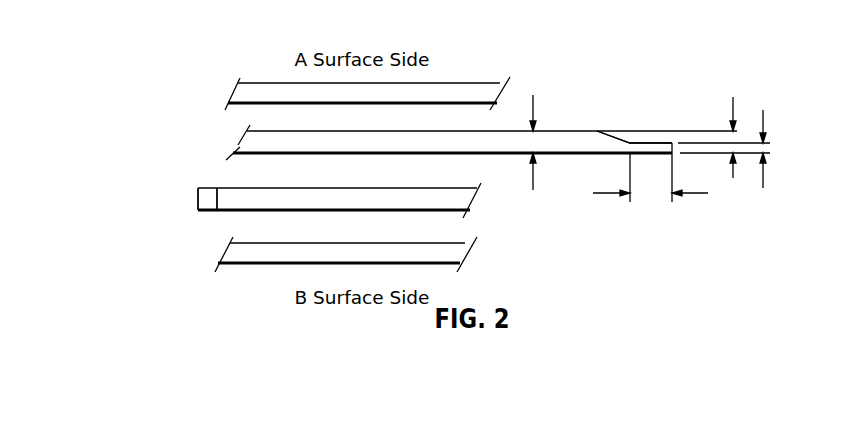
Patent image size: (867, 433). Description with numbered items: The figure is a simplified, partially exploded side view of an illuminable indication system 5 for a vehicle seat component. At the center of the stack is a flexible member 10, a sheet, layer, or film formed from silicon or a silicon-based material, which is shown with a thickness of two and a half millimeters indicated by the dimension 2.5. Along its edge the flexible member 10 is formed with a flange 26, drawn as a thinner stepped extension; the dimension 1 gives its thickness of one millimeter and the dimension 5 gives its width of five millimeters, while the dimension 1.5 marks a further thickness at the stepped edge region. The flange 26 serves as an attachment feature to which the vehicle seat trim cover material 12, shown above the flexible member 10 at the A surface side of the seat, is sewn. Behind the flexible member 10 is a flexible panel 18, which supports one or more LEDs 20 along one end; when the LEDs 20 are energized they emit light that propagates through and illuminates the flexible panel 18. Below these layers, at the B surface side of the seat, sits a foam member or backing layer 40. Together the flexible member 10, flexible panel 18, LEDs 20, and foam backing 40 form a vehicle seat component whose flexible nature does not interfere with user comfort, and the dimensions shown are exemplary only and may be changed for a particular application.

The thickness dimension 1 mm 1 is at (764, 176).
The thickness dimension 1.5 mm 1.5 is at (735, 99).
The thickness dimension 2.5 mm 2.5 is at (533, 182).
The indication system 5 is at (693, 193).
The flexible member 10 is at (240, 142).
The trim cover material 12 is at (279, 91).
The flexible panel 18 is at (428, 210).
The LEDs 20 is at (203, 211).
The flange 26 is at (653, 142).
The foam member 40 is at (268, 262).